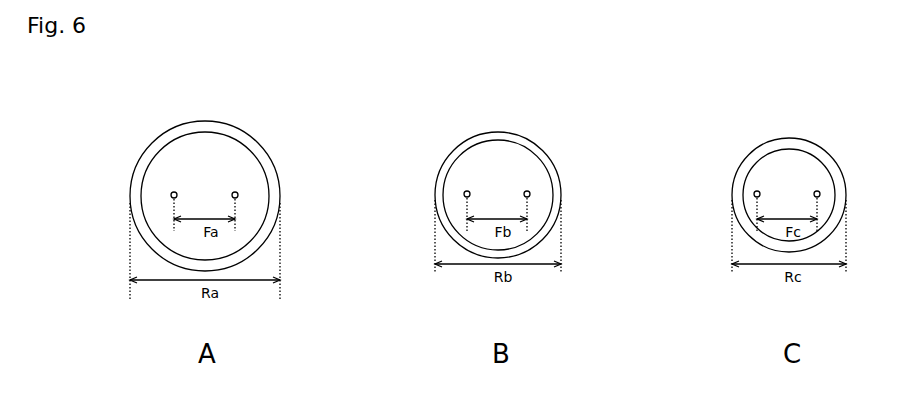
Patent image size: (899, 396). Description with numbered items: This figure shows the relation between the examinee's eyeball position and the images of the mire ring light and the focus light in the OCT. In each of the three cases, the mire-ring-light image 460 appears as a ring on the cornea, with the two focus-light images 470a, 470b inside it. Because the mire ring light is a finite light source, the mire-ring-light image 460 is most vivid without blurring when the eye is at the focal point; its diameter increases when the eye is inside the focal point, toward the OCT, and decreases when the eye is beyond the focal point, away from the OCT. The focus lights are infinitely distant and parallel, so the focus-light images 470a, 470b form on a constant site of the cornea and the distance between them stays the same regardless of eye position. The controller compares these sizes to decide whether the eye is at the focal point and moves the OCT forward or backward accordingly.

The mire-ring-light image 460 is at (133, 170).
The focus-light image 470a is at (174, 192).
The focus-light image 470b is at (236, 192).